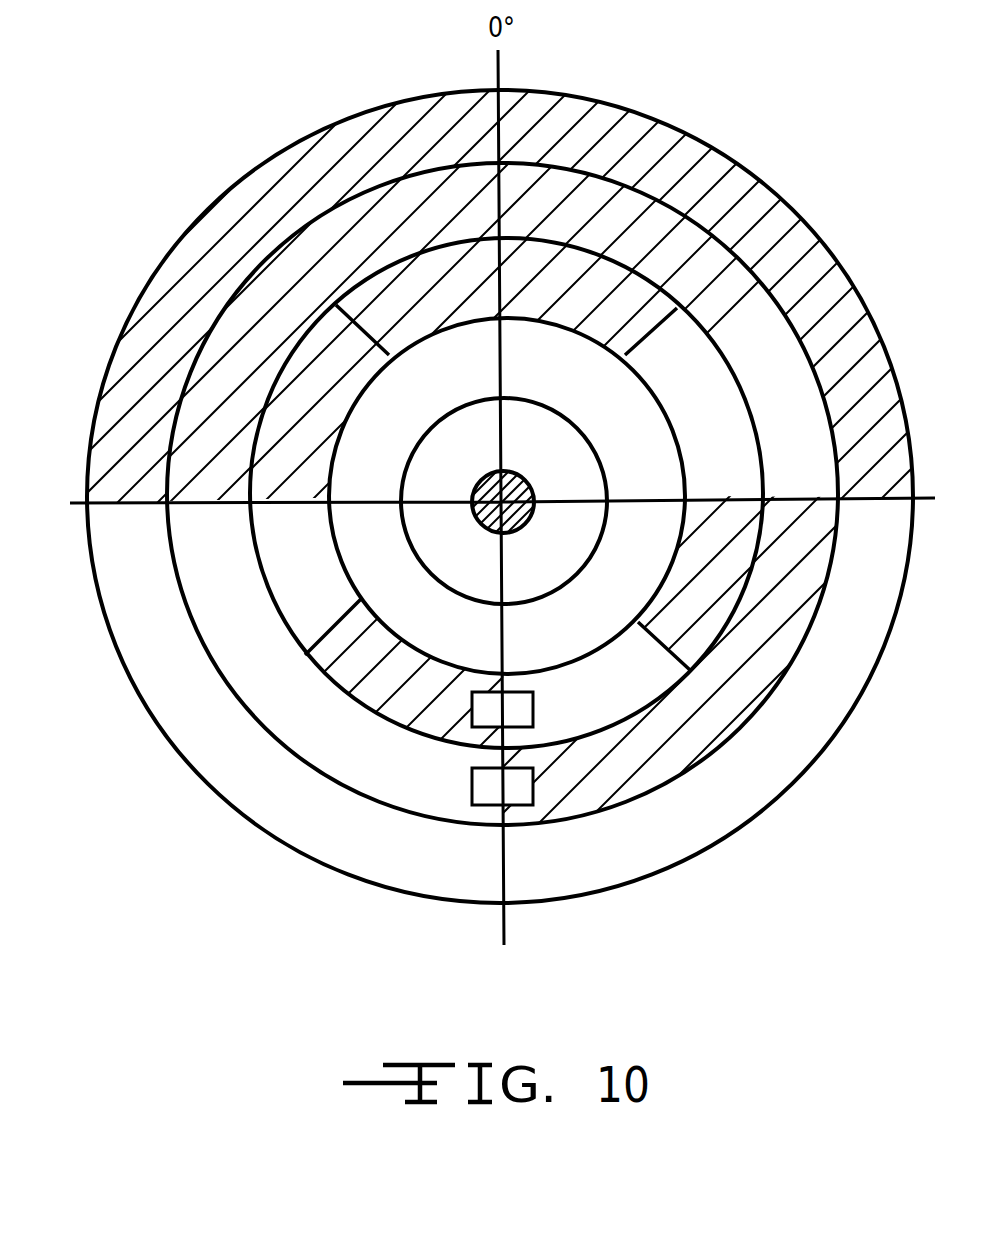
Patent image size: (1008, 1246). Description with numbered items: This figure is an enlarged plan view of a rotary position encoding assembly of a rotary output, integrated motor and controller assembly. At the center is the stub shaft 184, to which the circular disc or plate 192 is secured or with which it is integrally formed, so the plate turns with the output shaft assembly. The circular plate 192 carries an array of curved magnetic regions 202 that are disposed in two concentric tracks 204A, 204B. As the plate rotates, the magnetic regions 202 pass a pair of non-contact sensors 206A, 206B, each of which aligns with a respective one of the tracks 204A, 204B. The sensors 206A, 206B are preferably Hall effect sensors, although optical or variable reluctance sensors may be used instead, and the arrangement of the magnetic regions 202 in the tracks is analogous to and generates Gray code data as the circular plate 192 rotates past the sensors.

The stub shaft 184 is at (485, 512).
The circular plate 192 is at (145, 595).
The magnetic regions 202 is at (280, 178).
The track 204A is at (650, 793).
The track 204B is at (697, 625).
The non-contact sensor 206A is at (530, 805).
The non-contact sensor 206B is at (525, 702).